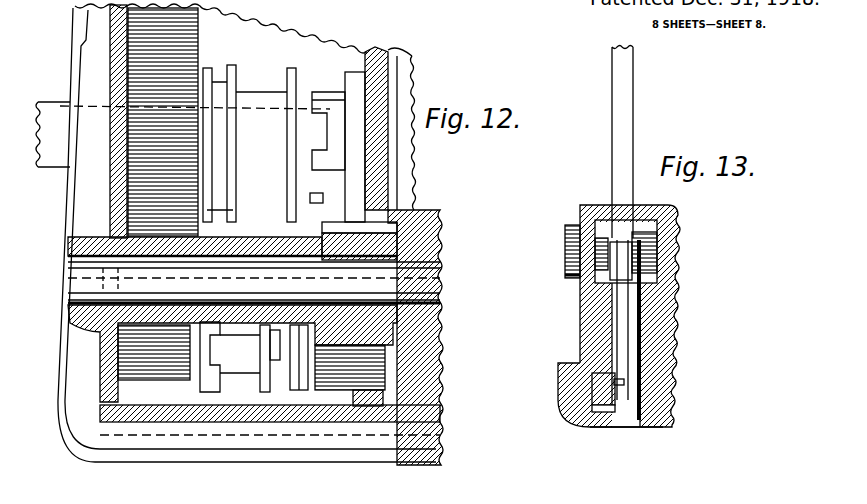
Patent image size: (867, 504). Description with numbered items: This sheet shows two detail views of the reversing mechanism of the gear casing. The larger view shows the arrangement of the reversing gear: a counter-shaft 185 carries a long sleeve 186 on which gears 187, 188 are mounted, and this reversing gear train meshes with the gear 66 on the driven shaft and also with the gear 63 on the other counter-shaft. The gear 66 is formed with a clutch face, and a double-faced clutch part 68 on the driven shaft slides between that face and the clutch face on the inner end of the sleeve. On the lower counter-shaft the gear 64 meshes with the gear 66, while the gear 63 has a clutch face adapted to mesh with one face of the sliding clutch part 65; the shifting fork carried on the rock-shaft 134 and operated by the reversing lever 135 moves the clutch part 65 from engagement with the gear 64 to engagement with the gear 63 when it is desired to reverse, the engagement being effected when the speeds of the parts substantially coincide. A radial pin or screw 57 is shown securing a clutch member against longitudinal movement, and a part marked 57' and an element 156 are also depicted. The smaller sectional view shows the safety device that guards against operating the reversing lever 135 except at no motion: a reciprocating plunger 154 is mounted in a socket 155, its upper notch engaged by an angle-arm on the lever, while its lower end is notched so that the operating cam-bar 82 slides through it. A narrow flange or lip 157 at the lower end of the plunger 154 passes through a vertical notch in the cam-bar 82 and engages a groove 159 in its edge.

In FIG. 12, the gear 66 is at (181, 122).
In FIG. 12, the double-faced clutch part 68 is at (252, 98).
In FIG. 12, the long sleeve 186 is at (256, 246).
In FIG. 12, the gear 187 is at (330, 237).
In FIG. 12, the counter-shaft 185 is at (413, 295).
In FIG. 12, the gear 188 is at (128, 330).
In FIG. 12, the gear 64 is at (128, 362).
In FIG. 12, the clutch part 65 is at (292, 357).
In FIG. 12, the gear 63 is at (387, 370).
In FIG. 13, the reversing lever 135 is at (624, 158).
In FIG. 13, the cap 57' is at (600, 208).
In FIG. 13, the rock-shaft 134 is at (565, 246).
In FIG. 13, the collar 156 is at (606, 275).
In FIG. 13, the socket 155 is at (600, 327).
In FIG. 13, the reciprocating plunger 154 is at (672, 305).
In FIG. 13, the groove 159 is at (624, 382).
In FIG. 13, the radial pin or screw 57 is at (561, 395).
In FIG. 13, the operating cam-bar 82 is at (587, 407).
In FIG. 13, the narrow flange or lip 157 is at (600, 428).